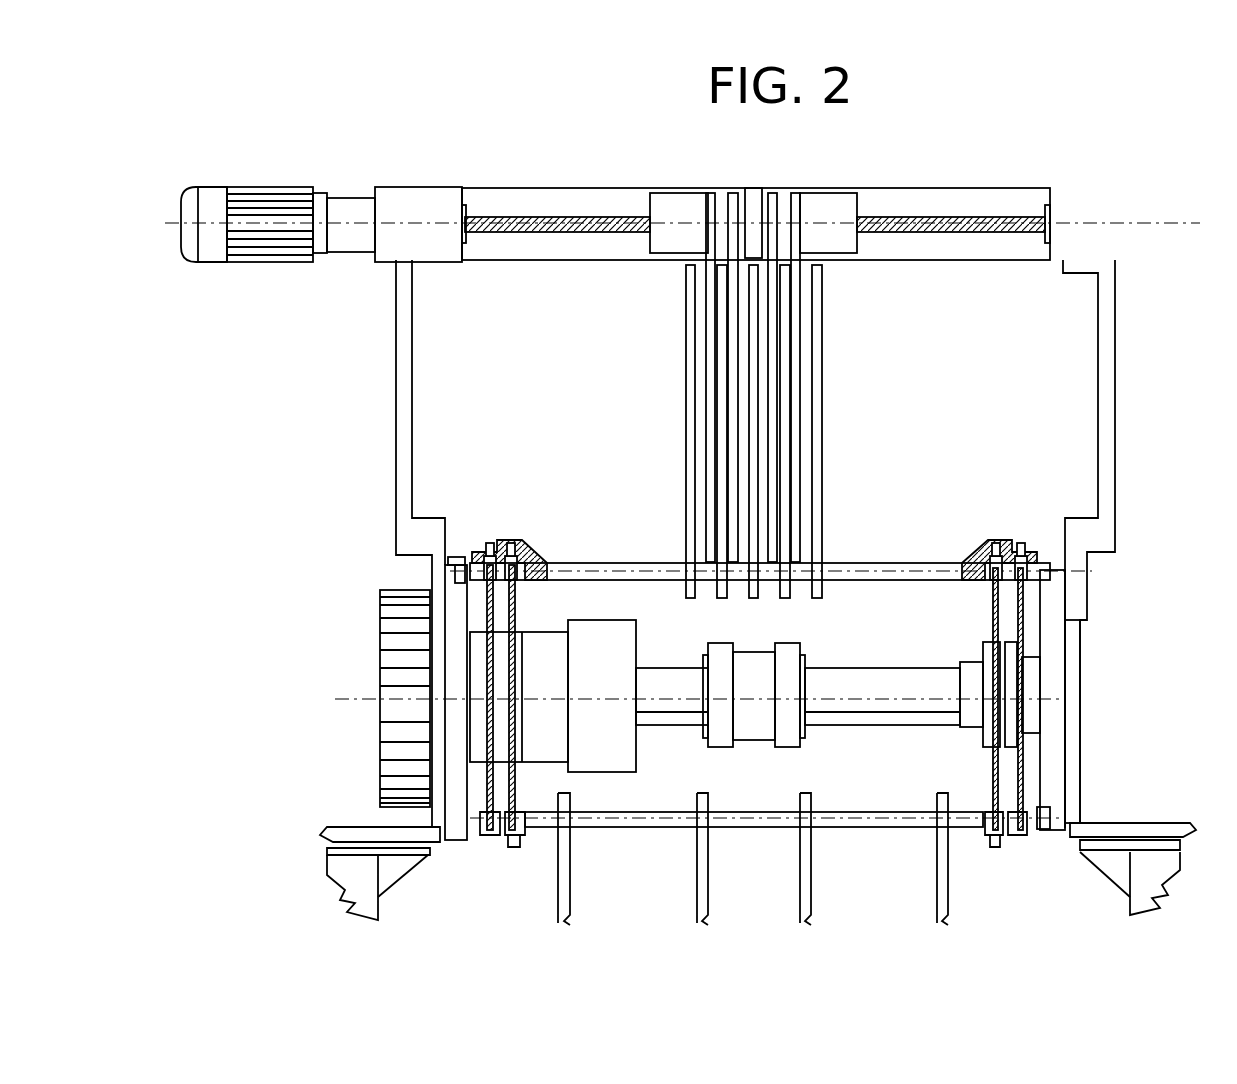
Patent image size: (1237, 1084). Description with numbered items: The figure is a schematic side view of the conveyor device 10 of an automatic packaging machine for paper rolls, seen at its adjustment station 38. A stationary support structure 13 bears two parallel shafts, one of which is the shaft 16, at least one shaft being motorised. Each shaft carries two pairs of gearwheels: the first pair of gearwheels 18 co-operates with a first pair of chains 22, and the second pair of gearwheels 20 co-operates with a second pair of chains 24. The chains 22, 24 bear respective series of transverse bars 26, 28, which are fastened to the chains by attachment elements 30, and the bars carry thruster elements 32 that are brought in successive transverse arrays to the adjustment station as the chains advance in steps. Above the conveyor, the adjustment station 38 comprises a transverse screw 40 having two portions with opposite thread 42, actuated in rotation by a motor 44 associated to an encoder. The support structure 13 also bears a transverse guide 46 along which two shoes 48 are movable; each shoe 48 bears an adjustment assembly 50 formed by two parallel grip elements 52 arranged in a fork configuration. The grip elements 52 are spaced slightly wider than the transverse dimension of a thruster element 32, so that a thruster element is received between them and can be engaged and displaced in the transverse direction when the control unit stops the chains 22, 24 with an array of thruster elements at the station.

The conveyor device 10 is at (1178, 142).
The stationary support structure 13 is at (1118, 468).
The shaft 16 is at (855, 680).
The first pair of gearwheels 18 is at (513, 606).
The second pair of gearwheels 20 is at (488, 615).
The first pair of chains 22 is at (516, 540).
The second pair of chains 24 is at (489, 552).
The transverse bars 26 is at (655, 563).
The transverse bars 28 is at (757, 832).
The attachment elements 30 is at (494, 541).
The thruster element 32 is at (722, 502).
The adjustment station 38 is at (1033, 163).
The transverse screw 40 is at (541, 210).
The portions with opposite thread 42 is at (623, 215).
The motor 44 is at (272, 202).
The transverse guide 46 is at (903, 188).
The shoes 48 is at (673, 210).
The adjustment assembly 50 is at (706, 322).
The grip elements 52 is at (736, 426).